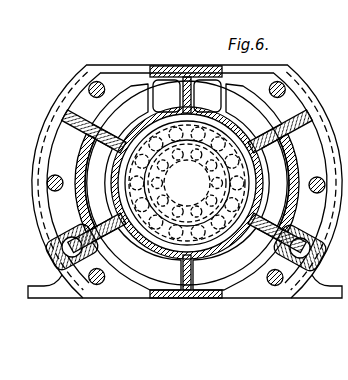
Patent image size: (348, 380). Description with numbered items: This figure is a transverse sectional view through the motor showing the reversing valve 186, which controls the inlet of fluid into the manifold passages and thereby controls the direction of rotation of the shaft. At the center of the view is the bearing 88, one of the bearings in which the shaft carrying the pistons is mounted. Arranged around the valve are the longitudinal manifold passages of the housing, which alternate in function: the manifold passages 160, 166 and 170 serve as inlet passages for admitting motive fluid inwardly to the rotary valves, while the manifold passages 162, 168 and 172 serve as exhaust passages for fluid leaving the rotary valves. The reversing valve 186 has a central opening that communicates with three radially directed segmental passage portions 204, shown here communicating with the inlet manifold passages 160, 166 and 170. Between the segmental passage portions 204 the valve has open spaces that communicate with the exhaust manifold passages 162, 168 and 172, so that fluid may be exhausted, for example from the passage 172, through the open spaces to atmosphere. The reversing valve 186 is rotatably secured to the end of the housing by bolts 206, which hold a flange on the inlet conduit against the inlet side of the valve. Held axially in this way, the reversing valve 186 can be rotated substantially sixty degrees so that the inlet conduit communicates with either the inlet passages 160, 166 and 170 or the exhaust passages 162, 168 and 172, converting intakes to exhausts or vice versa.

The manifold passage 160 is at (306, 93).
The manifold passage 162 is at (274, 176).
The bearing 88 is at (210, 213).
The manifold passage 166 is at (240, 268).
The manifold passage 168 is at (145, 263).
The manifold passage 170 is at (90, 210).
The manifold passage 172 is at (101, 122).
The reversing valve 186 is at (183, 106).
The segmental passage portion 204 is at (190, 112).
The bolt 206 is at (100, 85).